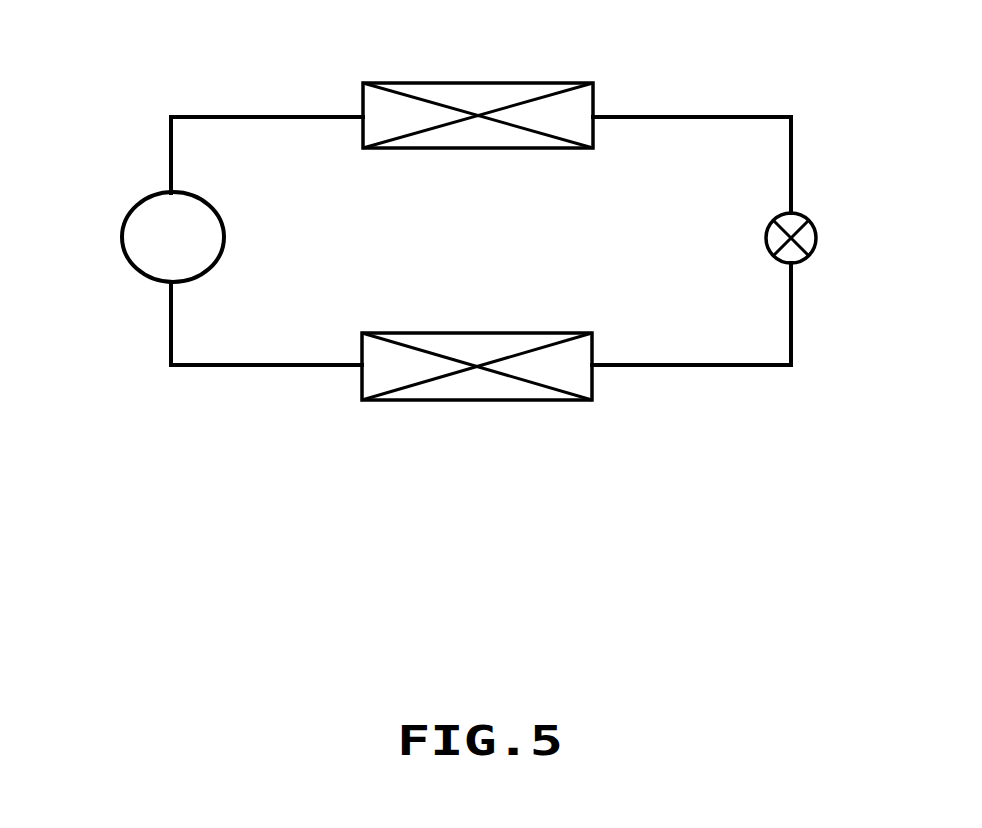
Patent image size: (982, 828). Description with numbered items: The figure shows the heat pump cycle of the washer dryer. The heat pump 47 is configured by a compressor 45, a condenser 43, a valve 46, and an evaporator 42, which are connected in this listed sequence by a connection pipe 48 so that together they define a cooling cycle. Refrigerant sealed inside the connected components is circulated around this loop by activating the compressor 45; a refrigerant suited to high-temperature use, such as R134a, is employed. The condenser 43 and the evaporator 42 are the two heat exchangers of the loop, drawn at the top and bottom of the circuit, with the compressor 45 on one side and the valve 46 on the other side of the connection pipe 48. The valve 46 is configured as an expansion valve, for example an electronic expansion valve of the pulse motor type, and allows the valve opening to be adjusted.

The evaporator 42 is at (469, 401).
The condenser 43 is at (472, 83).
The compressor 45 is at (122, 240).
The valve 46 is at (817, 233).
The heat pump 47 is at (436, 240).
The connection pipe 48 is at (255, 114).